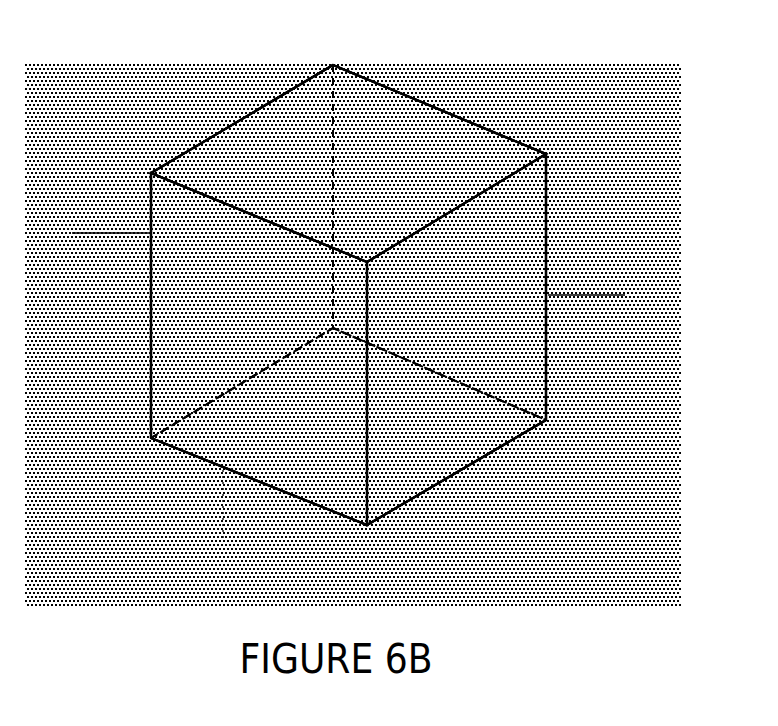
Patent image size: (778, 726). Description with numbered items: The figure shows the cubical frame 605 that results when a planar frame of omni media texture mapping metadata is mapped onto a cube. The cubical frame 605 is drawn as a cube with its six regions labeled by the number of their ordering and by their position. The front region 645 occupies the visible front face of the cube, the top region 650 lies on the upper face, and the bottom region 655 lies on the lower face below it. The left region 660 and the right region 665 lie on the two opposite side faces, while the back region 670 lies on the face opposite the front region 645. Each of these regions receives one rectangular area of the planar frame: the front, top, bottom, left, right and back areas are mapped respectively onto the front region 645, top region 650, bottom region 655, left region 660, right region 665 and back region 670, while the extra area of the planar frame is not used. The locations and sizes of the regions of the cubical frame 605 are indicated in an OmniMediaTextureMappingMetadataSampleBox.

The cubical frame 605 is at (180, 66).
The front region 645 is at (244, 300).
The top region 650 is at (368, 126).
The bottom region 655 is at (210, 554).
The left region 660 is at (484, 284).
The right region 665 is at (52, 222).
The back region 670 is at (644, 284).